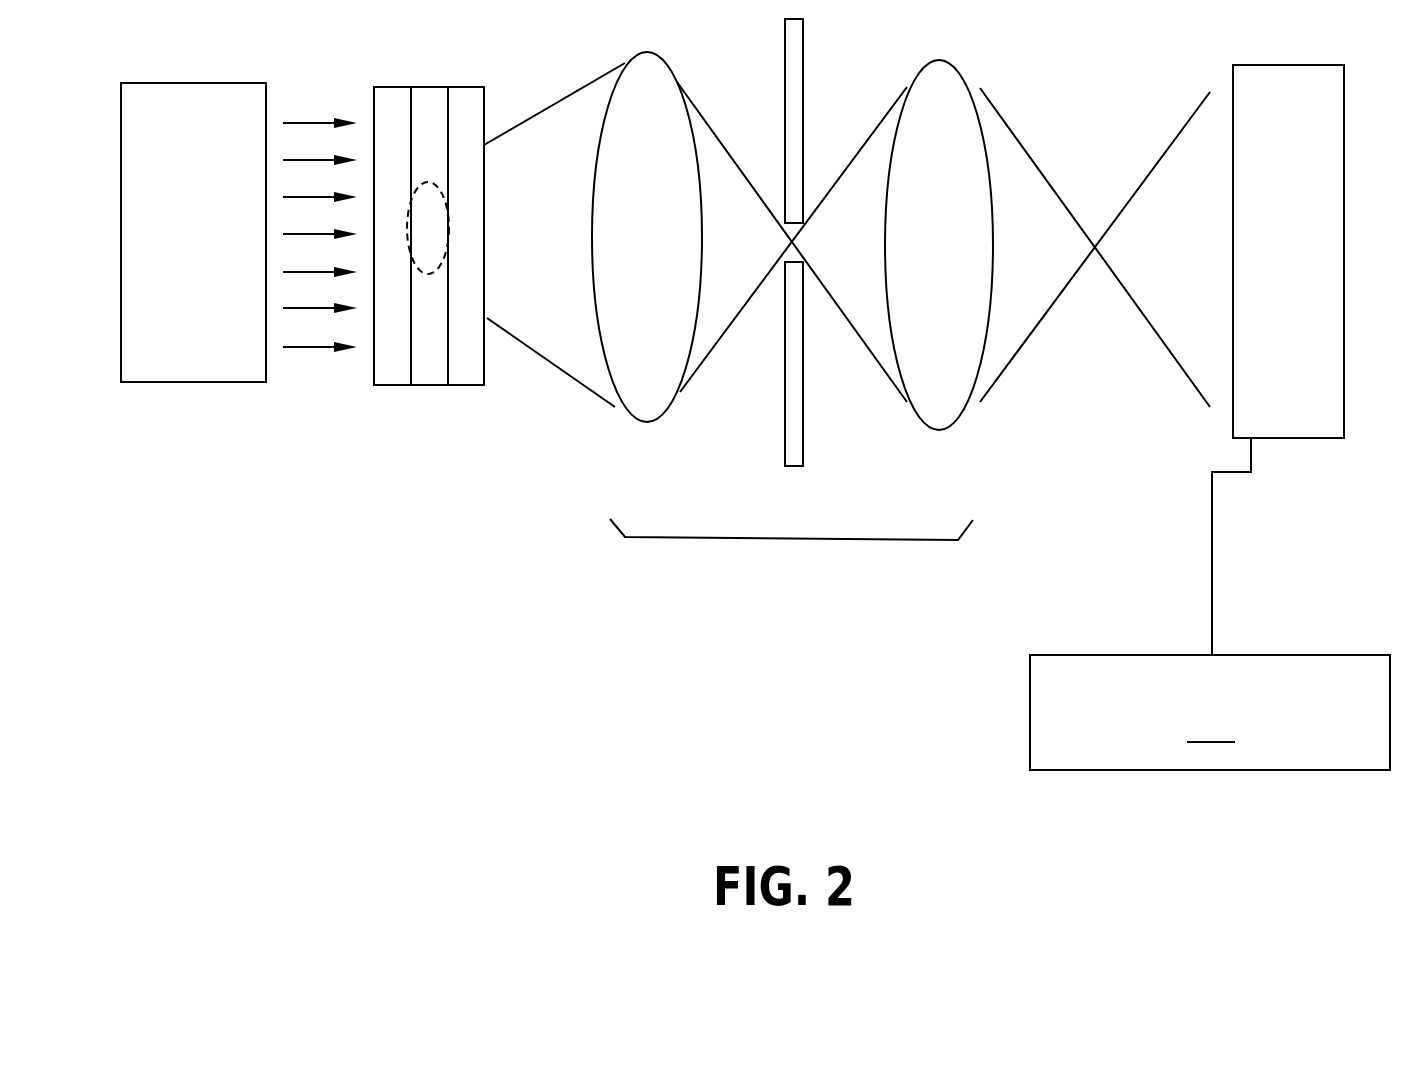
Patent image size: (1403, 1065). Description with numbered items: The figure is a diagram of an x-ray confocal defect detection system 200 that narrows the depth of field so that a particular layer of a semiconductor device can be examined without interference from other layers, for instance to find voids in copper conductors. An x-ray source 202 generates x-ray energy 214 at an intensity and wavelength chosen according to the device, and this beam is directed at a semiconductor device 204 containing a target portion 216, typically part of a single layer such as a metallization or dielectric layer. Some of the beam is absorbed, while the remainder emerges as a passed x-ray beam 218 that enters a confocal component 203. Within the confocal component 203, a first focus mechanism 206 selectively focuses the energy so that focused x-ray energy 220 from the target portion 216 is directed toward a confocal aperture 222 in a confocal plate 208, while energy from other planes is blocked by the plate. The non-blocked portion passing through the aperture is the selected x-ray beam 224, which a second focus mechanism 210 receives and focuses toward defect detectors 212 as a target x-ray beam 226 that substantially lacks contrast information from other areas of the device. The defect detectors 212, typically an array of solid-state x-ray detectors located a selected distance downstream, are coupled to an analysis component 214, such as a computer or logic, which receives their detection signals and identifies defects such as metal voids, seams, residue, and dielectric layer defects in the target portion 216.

The x-ray confocal defect detection system 200 is at (263, 583).
The x-ray source 202 is at (183, 382).
The confocal component 203 is at (787, 540).
The semiconductor device 204 is at (418, 385).
The first focus mechanism 206 is at (638, 423).
The confocal plate 208 is at (787, 466).
The second focus mechanism 210 is at (934, 430).
The defect detectors 212 is at (1295, 438).
The x-ray energy 214 is at (300, 363).
The target portion 216 is at (442, 195).
The passed x-ray beam 218 is at (527, 385).
The focused x-ray energy 220 is at (709, 385).
The confocal aperture 222 is at (789, 241).
The selected x-ray beam 224 is at (837, 385).
The target x-ray beam 226 is at (1065, 385).